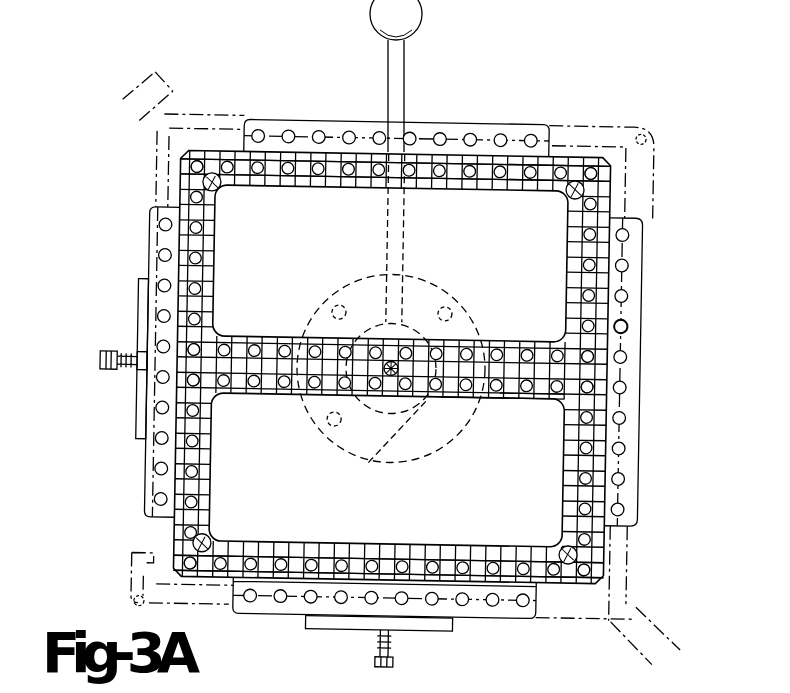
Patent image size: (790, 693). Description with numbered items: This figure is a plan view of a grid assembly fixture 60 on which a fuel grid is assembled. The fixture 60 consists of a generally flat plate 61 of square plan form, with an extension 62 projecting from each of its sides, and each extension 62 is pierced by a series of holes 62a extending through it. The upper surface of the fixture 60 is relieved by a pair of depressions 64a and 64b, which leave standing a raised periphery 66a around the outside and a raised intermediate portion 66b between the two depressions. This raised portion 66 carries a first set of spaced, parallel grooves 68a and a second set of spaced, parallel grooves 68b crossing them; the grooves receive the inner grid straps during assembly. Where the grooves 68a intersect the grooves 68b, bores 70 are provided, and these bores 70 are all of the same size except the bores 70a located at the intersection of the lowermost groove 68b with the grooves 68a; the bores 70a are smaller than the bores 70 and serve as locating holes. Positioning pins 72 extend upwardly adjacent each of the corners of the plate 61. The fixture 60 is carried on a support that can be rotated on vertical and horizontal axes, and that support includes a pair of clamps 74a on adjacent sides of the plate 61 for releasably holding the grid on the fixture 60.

The grid assembly fixture 60 is at (629, 561).
The flat plate 61 is at (563, 278).
The extension 62 is at (517, 128).
The hole 62a is at (627, 326).
The depression 64a is at (523, 254).
The depression 64b is at (505, 470).
The raised portion 66 is at (490, 346).
The raised periphery 66a is at (505, 408).
The raised intermediate portion 66b is at (500, 398).
The first set of grooves 68a is at (298, 186).
The second set of grooves 68b is at (213, 305).
The bore 70 is at (320, 173).
The bore 70a is at (490, 560).
The positioning pin 72 is at (562, 196).
The clamp 74a is at (133, 384).